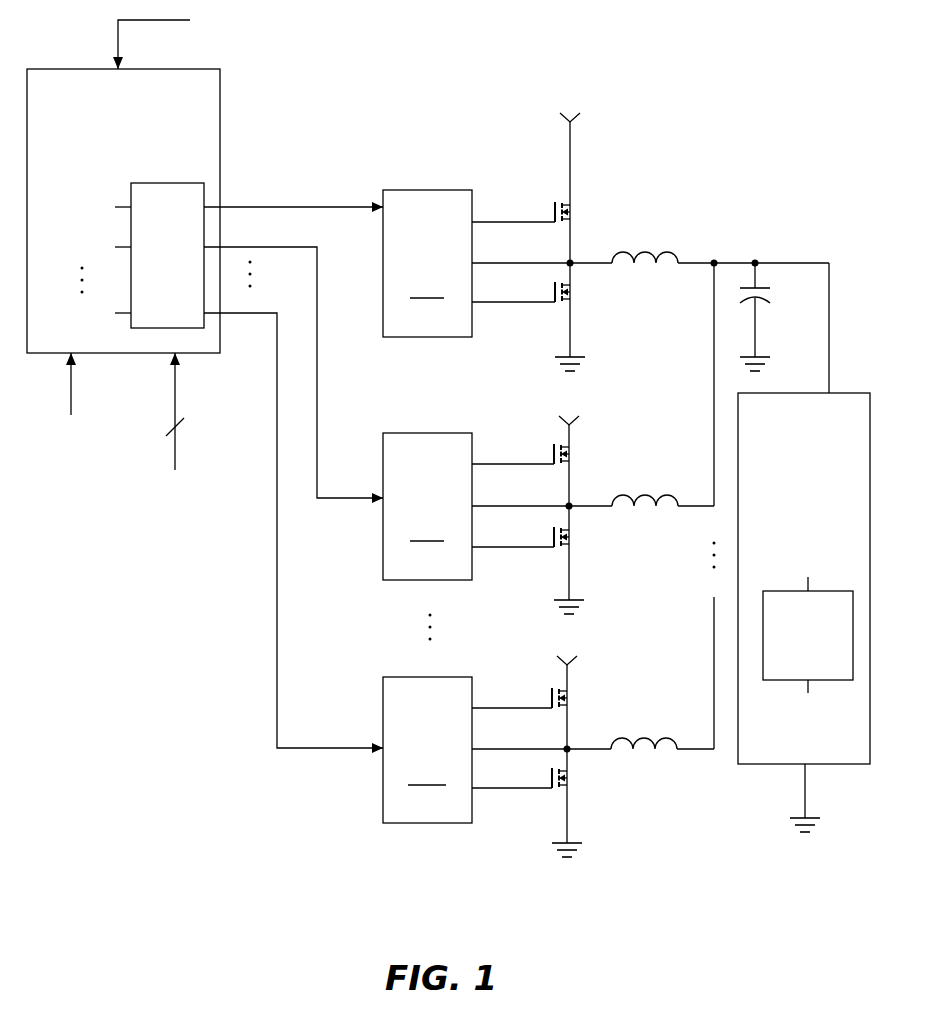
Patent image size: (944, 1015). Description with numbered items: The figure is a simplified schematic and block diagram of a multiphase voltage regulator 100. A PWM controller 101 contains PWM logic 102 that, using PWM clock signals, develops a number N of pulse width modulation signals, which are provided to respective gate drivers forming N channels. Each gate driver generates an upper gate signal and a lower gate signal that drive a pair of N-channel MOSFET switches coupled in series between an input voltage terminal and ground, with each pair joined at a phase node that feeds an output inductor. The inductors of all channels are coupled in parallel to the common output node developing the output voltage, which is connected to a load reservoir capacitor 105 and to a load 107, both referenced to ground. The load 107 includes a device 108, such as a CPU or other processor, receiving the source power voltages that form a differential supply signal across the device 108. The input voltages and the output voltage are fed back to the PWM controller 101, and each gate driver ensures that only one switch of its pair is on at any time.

The multiphase voltage regulator 100 is at (709, 131).
The PWM controller 101 is at (110, 124).
The PWM logic 102 is at (166, 183).
The load reservoir capacitor 105 is at (760, 299).
The load 107 is at (790, 447).
The device 108 is at (794, 658).